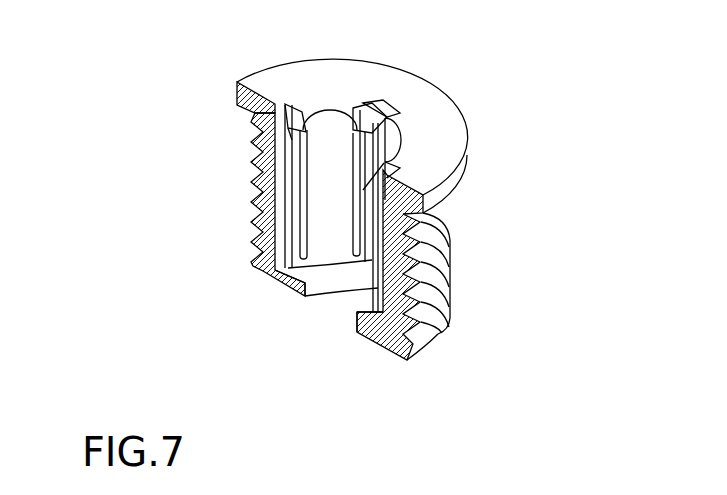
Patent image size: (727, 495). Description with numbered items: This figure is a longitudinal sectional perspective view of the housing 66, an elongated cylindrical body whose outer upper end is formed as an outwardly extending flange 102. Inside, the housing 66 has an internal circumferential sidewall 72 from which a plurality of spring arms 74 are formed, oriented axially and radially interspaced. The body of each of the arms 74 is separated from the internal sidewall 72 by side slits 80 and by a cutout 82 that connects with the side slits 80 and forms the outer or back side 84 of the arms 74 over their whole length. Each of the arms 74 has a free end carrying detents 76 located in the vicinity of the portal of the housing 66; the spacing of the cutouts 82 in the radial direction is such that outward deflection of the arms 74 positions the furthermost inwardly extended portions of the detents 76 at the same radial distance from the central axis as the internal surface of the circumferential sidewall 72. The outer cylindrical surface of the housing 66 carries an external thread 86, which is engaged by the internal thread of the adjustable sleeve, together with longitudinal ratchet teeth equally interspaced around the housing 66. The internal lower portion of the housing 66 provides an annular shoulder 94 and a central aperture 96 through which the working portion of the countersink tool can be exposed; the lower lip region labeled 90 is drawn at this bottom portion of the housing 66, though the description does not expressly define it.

The housing 66 is at (447, 286).
The internal circumferential sidewall 72 is at (330, 120).
The spring arms 74 is at (365, 210).
The detents 76 is at (285, 120).
The side slits 80 is at (386, 161).
The cutout 82 is at (283, 201).
The outer or back side 84 is at (380, 250).
The external thread 86 is at (447, 325).
The inner lip 90 is at (419, 313).
The annular shoulder 94 is at (308, 275).
The central aperture 96 is at (317, 288).
The outwardly extending flange 102 is at (447, 186).